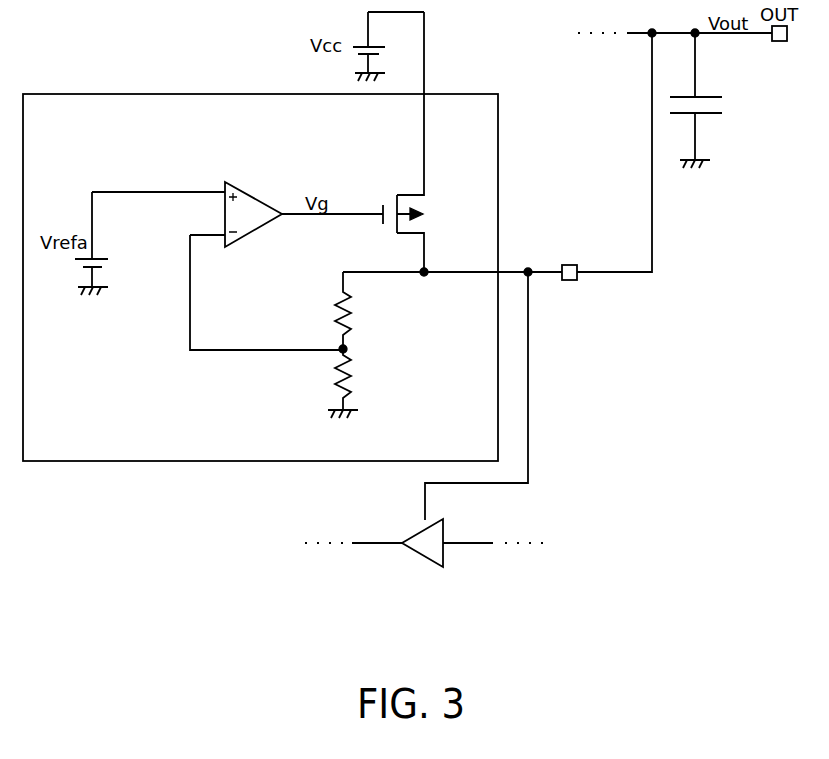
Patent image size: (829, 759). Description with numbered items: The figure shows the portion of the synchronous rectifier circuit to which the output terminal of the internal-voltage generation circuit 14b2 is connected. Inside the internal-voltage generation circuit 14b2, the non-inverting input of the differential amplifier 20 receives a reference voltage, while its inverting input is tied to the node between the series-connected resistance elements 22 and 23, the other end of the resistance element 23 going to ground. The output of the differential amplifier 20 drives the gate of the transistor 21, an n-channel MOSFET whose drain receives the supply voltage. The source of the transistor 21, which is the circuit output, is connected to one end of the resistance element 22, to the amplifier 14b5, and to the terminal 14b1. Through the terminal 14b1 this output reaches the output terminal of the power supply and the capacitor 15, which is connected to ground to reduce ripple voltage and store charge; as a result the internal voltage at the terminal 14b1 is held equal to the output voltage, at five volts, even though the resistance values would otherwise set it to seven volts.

The internal-voltage generation circuit 14b2 is at (110, 94).
The differential amplifier 20 is at (232, 186).
The transistor 21 is at (412, 193).
The resistance element 22 is at (333, 311).
The resistance element 23 is at (333, 376).
The terminal 14b1 is at (569, 265).
The capacitor 15 is at (703, 95).
The amplifier 14b5 is at (423, 535).